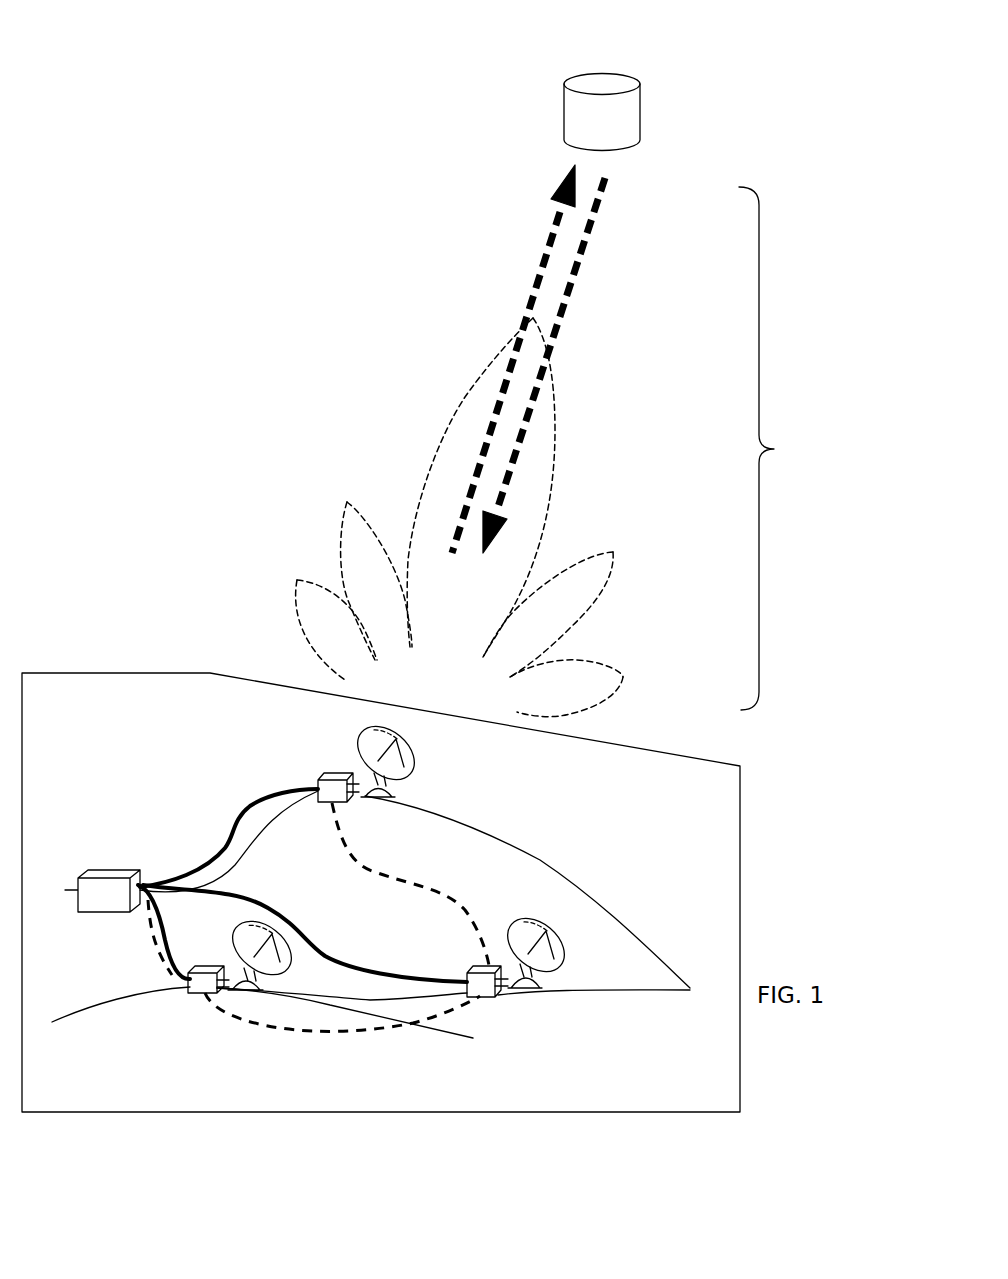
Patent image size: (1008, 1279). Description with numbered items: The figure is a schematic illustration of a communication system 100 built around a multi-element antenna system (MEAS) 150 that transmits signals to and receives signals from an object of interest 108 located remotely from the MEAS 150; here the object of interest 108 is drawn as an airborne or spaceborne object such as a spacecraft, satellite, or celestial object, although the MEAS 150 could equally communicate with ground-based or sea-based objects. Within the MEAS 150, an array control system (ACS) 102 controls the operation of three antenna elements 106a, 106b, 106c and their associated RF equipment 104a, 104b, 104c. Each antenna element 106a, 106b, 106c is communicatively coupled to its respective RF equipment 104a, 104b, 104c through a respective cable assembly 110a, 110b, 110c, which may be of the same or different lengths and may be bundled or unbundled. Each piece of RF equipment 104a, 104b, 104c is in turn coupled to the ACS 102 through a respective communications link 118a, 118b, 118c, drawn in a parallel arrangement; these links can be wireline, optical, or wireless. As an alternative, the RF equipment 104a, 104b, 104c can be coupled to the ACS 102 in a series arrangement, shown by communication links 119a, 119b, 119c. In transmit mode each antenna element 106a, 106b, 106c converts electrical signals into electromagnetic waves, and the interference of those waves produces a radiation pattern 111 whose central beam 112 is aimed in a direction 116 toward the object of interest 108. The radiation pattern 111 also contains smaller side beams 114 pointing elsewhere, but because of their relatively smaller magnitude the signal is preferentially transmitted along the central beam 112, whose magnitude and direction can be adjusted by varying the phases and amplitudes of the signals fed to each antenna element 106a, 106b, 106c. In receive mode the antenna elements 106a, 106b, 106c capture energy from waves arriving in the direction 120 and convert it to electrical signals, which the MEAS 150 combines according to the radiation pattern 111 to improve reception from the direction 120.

The communication system 100 is at (350, 140).
The array control system (ACS) 102 is at (102, 880).
The RF equipment 104a is at (202, 977).
The RF equipment 104b is at (488, 976).
The RF equipment 104c is at (323, 779).
The antenna element 106a is at (277, 957).
The antenna element 106b is at (527, 927).
The antenna element 106c is at (443, 782).
The object of interest 108 is at (619, 122).
The cable assembly 110a is at (237, 992).
The cable assembly 110b is at (505, 973).
The cable assembly 110c is at (358, 795).
The radiation pattern 111 is at (822, 467).
The central beam 112 is at (463, 393).
The side beams 114 is at (357, 485).
The direction of the object of interest 116 is at (540, 275).
The communications link 118a is at (163, 945).
The communications link 118b is at (393, 976).
The communications link 118c is at (258, 803).
The communication link 119a is at (163, 965).
The communication link 119b is at (393, 1047).
The communication link 119c is at (580, 828).
The direction 120 is at (640, 386).
The multi-element antenna system (MEAS) 150 is at (106, 734).